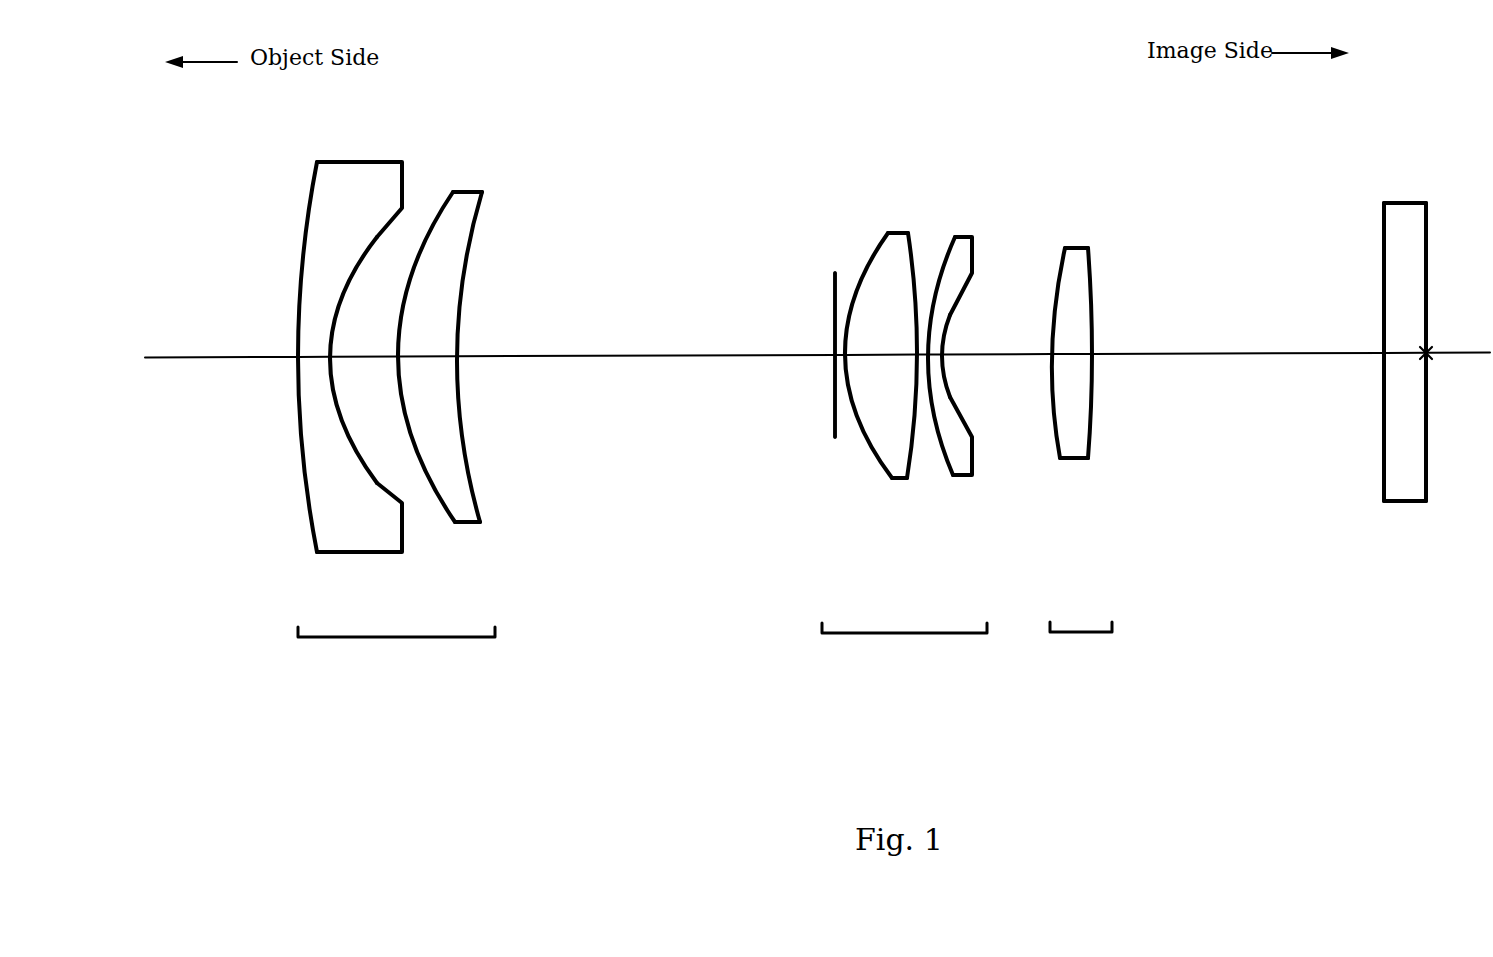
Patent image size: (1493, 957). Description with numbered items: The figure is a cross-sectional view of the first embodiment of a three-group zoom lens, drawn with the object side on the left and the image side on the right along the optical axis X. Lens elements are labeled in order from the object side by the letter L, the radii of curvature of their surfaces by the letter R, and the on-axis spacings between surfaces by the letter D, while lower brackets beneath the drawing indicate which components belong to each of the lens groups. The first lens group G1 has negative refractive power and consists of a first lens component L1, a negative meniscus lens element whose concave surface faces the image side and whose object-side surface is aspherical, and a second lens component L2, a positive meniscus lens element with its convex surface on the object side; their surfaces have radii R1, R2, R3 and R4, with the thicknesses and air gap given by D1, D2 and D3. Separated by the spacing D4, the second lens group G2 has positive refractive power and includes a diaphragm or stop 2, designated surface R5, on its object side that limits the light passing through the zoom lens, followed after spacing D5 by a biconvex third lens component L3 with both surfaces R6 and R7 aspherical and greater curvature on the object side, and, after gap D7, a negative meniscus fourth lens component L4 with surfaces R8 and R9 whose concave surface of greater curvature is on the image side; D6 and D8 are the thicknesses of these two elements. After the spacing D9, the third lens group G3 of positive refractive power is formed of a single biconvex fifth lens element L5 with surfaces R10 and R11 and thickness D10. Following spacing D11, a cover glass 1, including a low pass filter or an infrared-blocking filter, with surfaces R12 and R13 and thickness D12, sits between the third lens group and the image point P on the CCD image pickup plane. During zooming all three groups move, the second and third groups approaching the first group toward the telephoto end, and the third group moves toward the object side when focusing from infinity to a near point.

The cover glass 1 is at (1395, 358).
The diaphragm or stop 2 is at (832, 437).
The optical axis X is at (187, 358).
The image point P is at (1428, 356).
The first lens group G1 is at (446, 722).
The second lens group G2 is at (848, 726).
The third lens group G3 is at (1012, 734).
The first lens component L1 is at (341, 361).
The second lens component L2 is at (470, 356).
The third lens component L3 is at (878, 348).
The fourth lens component L4 is at (967, 361).
The fifth lens element L5 is at (1100, 367).
The radius of curvature of first lens surface R1 is at (305, 227).
The radius of curvature of second lens surface R2 is at (383, 238).
The radius of curvature of third lens surface R3 is at (430, 215).
The radius of curvature of fourth lens surface R4 is at (472, 267).
The radius of curvature of stop surface R5 is at (832, 298).
The radius of curvature of sixth surface R6 is at (868, 267).
The radius of curvature of seventh surface R7 is at (917, 267).
The radius of curvature of eighth surface R8 is at (942, 257).
The radius of curvature of ninth surface R9 is at (957, 317).
The radius of curvature of tenth surface R10 is at (1058, 277).
The radius of curvature of eleventh surface R11 is at (1093, 288).
The radius of curvature of twelfth surface R12 is at (1384, 221).
The radius of curvature of thirteenth surface R13 is at (1427, 221).
The first on-axis surface spacing D1 is at (315, 360).
The second on-axis surface spacing D2 is at (360, 360).
The third on-axis surface spacing D3 is at (423, 359).
The fourth on-axis surface spacing D4 is at (645, 357).
The fifth on-axis surface spacing D5 is at (830, 358).
The sixth on-axis surface spacing D6 is at (877, 360).
The seventh on-axis surface spacing D7 is at (923, 358).
The eighth on-axis surface spacing D8 is at (942, 360).
The ninth on-axis surface spacing D9 is at (1000, 358).
The tenth on-axis surface spacing D10 is at (1072, 357).
The eleventh on-axis surface spacing D11 is at (1240, 354).
The twelfth on-axis surface spacing D12 is at (1403, 355).